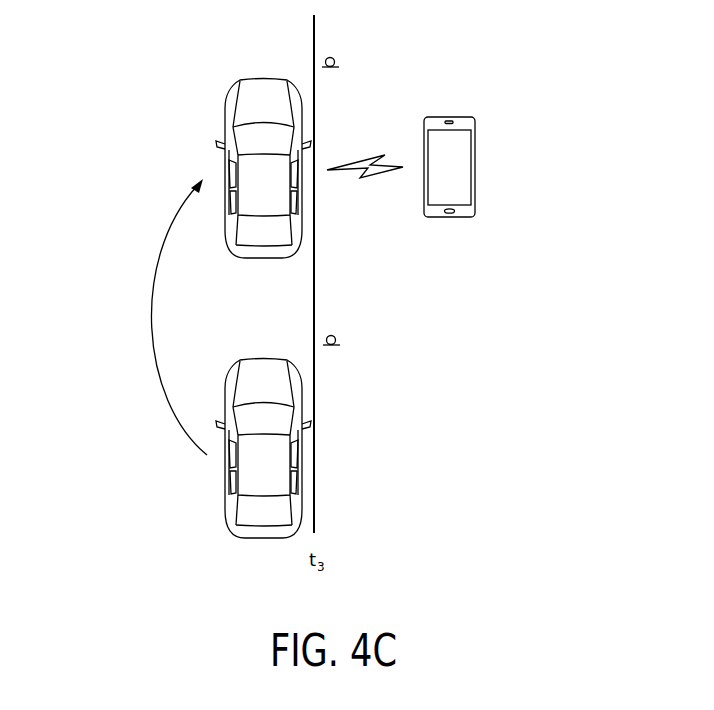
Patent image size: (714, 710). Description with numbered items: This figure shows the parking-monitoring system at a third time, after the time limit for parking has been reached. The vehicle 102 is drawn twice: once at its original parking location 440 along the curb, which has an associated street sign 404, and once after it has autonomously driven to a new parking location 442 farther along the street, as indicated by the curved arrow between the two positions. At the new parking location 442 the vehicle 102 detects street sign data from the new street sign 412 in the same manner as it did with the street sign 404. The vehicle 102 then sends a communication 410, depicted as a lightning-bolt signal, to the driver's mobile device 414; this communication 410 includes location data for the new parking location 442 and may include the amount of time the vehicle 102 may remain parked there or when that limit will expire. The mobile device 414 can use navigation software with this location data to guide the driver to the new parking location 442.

The vehicle 102 is at (240, 81).
The street sign 404 is at (336, 338).
The communication 410 is at (365, 179).
The new street sign 412 is at (335, 61).
The mobile device 414 is at (475, 152).
The parking location 440 is at (192, 511).
The new parking location 442 is at (192, 127).